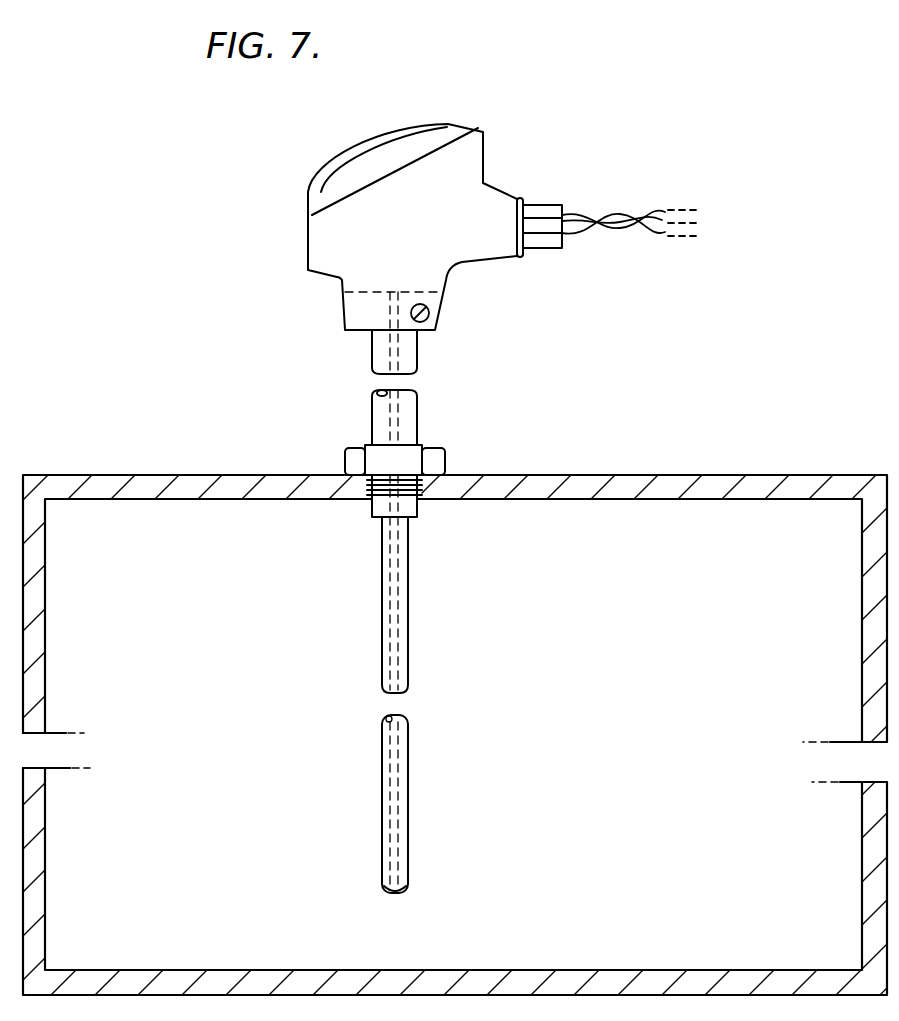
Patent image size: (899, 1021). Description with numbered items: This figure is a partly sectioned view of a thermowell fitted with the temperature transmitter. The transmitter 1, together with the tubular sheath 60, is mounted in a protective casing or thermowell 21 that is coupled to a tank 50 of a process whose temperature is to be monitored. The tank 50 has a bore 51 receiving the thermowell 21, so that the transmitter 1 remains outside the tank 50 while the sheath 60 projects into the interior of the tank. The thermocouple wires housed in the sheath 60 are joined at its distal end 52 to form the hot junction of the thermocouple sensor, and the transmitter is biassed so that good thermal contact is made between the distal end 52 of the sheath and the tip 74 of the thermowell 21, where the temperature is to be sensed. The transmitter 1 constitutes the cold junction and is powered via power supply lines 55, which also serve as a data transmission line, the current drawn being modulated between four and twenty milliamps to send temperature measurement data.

The transmitter 1 is at (516, 115).
The thermowell 21 is at (447, 263).
The power supply lines 55 is at (656, 208).
The bore 51 is at (436, 487).
The tank 50 is at (673, 485).
The tubular sheath 60 is at (408, 668).
The distal end of the sheath 52 is at (386, 874).
The tip of the thermowell 74 is at (396, 893).